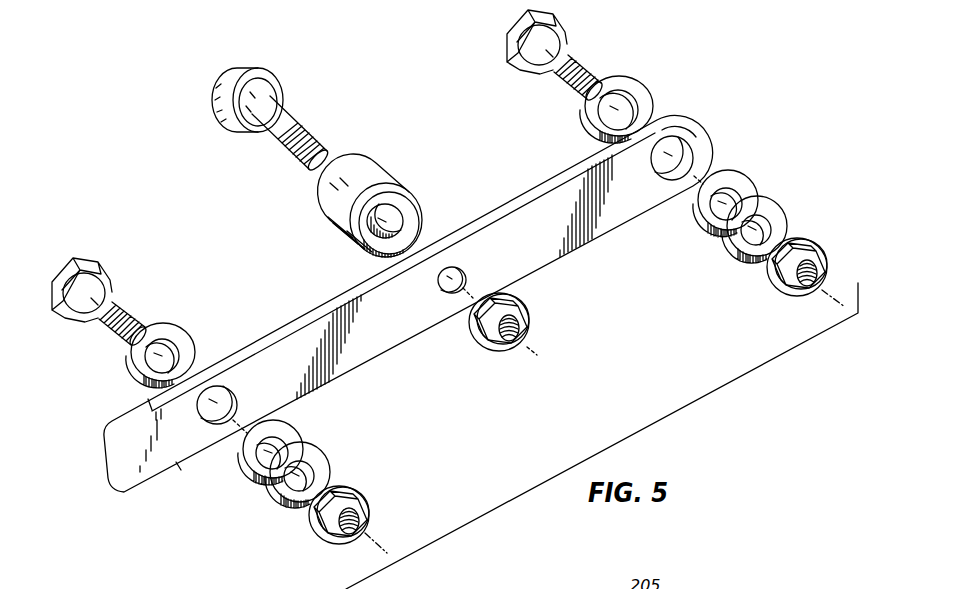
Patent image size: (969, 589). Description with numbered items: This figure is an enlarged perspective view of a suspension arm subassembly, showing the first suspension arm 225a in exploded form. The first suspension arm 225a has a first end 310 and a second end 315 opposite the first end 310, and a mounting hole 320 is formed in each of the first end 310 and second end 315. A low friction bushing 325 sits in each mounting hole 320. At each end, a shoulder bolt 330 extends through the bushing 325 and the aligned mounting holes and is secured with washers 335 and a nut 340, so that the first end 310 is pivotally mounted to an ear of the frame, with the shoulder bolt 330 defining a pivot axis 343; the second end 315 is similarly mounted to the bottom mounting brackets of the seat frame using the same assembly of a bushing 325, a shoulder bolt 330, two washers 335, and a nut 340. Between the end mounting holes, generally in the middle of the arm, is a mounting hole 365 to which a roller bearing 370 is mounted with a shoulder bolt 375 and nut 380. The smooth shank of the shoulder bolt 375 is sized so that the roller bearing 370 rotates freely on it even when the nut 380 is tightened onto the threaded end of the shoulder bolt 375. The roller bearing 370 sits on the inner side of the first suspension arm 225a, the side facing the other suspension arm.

The first suspension arm 225a is at (223, 199).
The first end 310 is at (155, 458).
The second end 315 is at (617, 211).
The mounting hole 320 is at (693, 160).
The low friction bushing 325 is at (738, 178).
The shoulder bolt 330 is at (555, 40).
The washers 335 is at (641, 88).
The nut 340 is at (808, 253).
The pivot axis 343 is at (831, 298).
The mounting hole 365 is at (467, 272).
The roller bearing 370 is at (362, 160).
The shoulder bolt 375 is at (280, 108).
The nut 380 is at (527, 316).